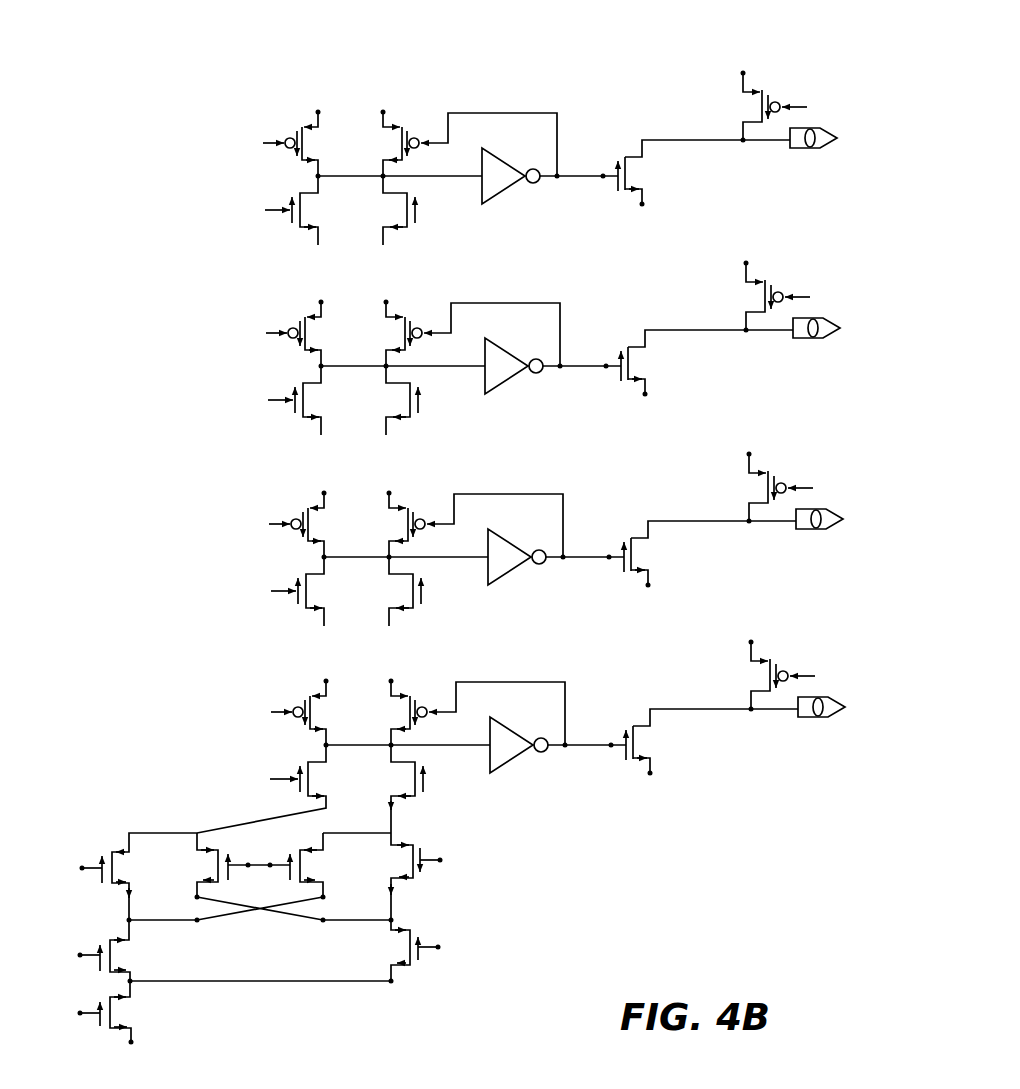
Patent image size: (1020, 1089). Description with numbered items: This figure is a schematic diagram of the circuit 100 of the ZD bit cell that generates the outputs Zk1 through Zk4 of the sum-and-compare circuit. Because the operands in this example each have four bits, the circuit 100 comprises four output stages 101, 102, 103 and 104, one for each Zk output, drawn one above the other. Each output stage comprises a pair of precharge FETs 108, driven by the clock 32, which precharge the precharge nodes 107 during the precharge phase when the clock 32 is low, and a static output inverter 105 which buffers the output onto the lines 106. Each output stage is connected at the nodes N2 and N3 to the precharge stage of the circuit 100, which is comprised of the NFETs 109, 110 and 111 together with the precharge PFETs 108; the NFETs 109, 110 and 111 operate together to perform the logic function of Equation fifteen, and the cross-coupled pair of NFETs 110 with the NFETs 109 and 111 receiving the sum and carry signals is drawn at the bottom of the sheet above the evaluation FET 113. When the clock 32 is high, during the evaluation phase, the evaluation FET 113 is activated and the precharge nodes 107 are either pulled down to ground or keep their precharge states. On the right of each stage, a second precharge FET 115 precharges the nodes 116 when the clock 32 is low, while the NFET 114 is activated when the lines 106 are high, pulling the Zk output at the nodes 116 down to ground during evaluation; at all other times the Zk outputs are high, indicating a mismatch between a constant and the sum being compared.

The circuit 100 is at (150, 66).
The clock 32 is at (206, 137).
The output stage 101 is at (605, 85).
The output stage 102 is at (504, 309).
The output stage 103 is at (507, 500).
The output stage 104 is at (509, 688).
The static output inverter 105 is at (500, 194).
The lines 106 is at (604, 172).
The precharge nodes 107 is at (461, 175).
The precharge FET 108 is at (304, 146).
The NFET 109 is at (291, 225).
The NFET 110 is at (207, 868).
The NFET 111 is at (421, 936).
The evaluation FET 113 is at (133, 1012).
The NFET 114 is at (644, 174).
The second precharge FET 115 is at (769, 100).
The nodes 116 is at (770, 144).